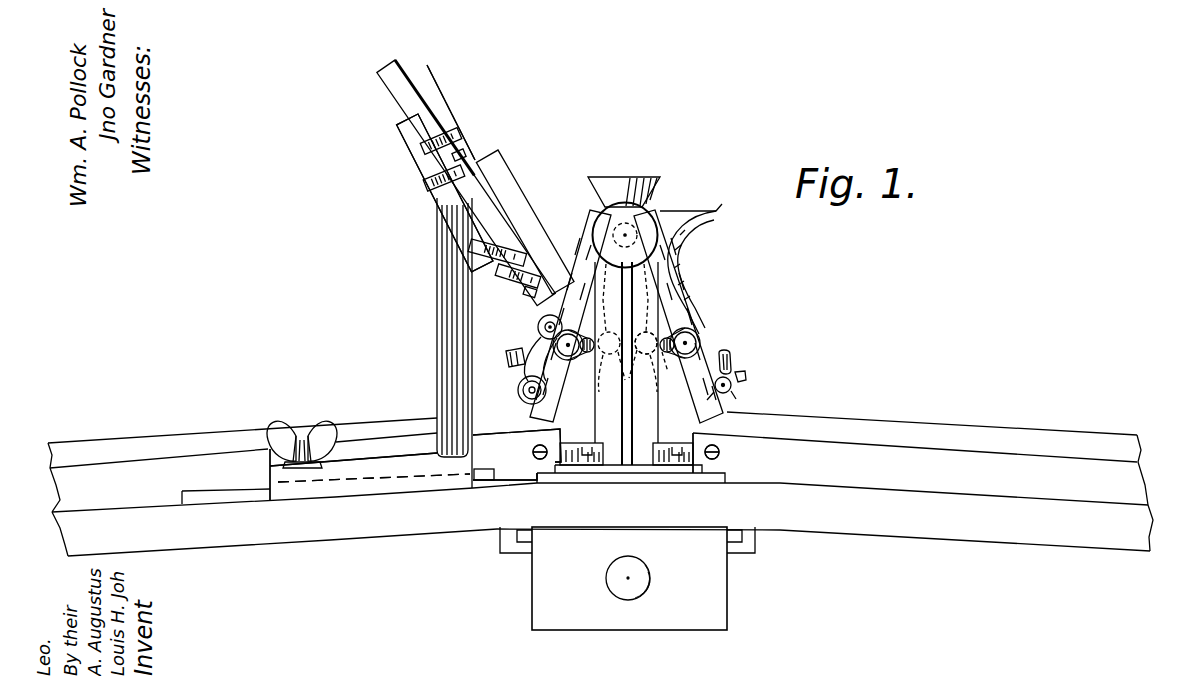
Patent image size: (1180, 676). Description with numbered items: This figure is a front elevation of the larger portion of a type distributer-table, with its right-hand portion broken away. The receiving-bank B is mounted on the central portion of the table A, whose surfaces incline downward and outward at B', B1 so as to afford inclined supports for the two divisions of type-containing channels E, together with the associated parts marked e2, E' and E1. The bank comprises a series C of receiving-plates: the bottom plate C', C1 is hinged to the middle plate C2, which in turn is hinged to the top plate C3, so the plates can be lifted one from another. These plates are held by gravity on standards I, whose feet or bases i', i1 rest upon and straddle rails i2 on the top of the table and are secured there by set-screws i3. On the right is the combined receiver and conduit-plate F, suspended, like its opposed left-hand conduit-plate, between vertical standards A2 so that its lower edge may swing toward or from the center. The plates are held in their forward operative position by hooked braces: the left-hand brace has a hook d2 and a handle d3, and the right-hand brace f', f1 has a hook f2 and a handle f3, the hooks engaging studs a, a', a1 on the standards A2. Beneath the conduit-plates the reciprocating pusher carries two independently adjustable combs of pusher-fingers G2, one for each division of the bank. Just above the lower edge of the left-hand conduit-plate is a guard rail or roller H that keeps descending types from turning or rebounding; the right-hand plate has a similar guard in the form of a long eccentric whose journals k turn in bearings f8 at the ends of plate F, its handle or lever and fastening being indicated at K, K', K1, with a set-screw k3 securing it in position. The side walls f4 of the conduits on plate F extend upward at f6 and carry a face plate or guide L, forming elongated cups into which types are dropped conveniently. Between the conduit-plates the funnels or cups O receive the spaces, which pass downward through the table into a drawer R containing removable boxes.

The table A is at (602, 519).
The inclined table surface B' is at (641, 520).
The inclined table surface B1 is at (641, 520).
The receiving-bank B is at (622, 293).
The type-containing channels E is at (598, 462).
The rail groove e2 is at (604, 473).
The carriage slide i' is at (370, 474).
The carriage slide i1 is at (370, 474).
The rails i2 is at (338, 486).
The set-screws i3 is at (302, 435).
The standard block E' is at (599, 456).
The standard block E1 is at (596, 454).
The pusher combs G2 is at (626, 448).
The standards I is at (454, 343).
The series of receiving-plates C is at (466, 183).
The bottom receiving-plate C' is at (445, 193).
The bottom receiving-plate C1 is at (445, 193).
The middle receiving-plate C2 is at (466, 146).
The top receiving-plate C3 is at (525, 222).
The space funnels O is at (624, 181).
The vertical standards A2 is at (625, 298).
The hook of left brace d2 is at (574, 316).
The handle of left brace d3 is at (573, 352).
The guard-roller H is at (513, 393).
The cam a is at (611, 348).
The studs a' is at (643, 350).
The studs a1 is at (646, 331).
The hook of right brace f2 is at (678, 316).
The handle of right brace f3 is at (680, 358).
The hooked brace f' is at (693, 321).
The hooked brace f1 is at (682, 337).
The combined receiver and conduit-plate F is at (705, 336).
The conduit side walls f4 is at (666, 241).
The guide tip f6 is at (684, 213).
The face plate or guide L is at (689, 253).
The bearings f8 is at (710, 360).
The pawl lever K is at (744, 400).
The journals k is at (733, 358).
The set-screw k3 is at (746, 377).
The pawl pivot K' is at (753, 394).
The pawl pivot K1 is at (731, 388).
The drawer R is at (627, 578).